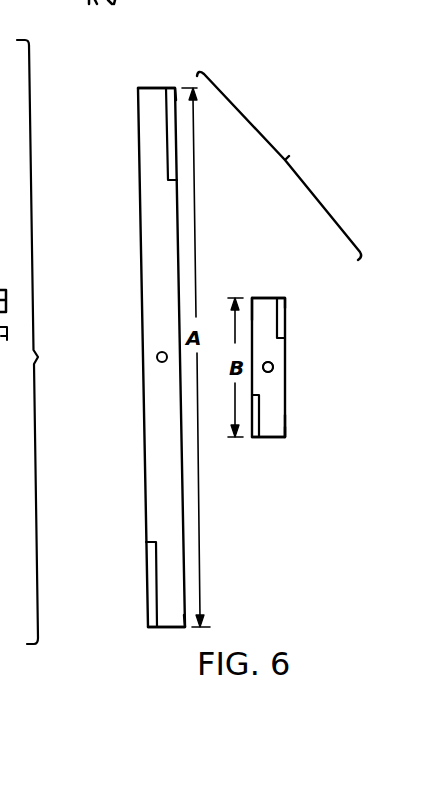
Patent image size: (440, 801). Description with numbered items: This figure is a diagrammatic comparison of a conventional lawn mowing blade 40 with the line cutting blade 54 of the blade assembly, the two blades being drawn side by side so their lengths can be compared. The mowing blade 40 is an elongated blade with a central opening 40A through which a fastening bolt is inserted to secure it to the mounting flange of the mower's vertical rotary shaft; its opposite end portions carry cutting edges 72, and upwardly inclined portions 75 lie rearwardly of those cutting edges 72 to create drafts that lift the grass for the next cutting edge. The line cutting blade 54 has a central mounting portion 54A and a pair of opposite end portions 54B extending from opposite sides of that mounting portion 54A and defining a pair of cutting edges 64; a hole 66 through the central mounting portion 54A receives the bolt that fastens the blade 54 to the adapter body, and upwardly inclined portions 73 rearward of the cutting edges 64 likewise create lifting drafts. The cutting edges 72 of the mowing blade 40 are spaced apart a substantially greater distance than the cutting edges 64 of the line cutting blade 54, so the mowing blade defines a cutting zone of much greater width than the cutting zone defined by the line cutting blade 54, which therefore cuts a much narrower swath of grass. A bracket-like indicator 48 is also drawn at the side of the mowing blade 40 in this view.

The mowing blade 40 is at (134, 361).
The central opening 40A is at (158, 359).
The bracket 48 is at (42, 355).
The line cutting blade 54 is at (294, 361).
The central mounting portion 54A is at (279, 375).
The opposite end portions 54B is at (270, 300).
The cutting edges 64 is at (282, 322).
The hole 66 is at (271, 373).
The cutting edges 72 is at (170, 118).
The upwardly inclined portion 73 is at (258, 312).
The upwardly inclined portion 75 is at (155, 97).